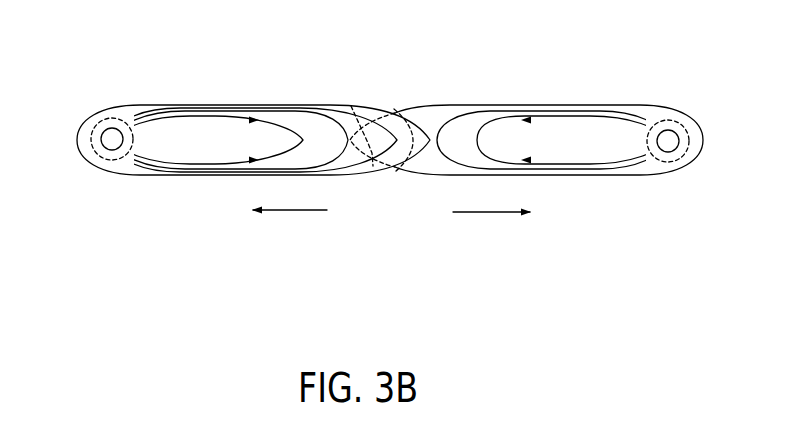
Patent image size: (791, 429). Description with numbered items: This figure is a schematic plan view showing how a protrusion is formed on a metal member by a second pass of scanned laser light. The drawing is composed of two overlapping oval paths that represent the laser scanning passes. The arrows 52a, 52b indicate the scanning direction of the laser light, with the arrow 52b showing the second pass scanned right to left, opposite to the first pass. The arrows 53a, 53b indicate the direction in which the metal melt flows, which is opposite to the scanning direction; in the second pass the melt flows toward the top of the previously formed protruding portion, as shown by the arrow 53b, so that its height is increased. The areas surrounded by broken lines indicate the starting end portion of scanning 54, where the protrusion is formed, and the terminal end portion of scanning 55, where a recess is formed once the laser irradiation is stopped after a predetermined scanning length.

The arrow indicating scanning direction 52a is at (490, 214).
The arrow indicating scanning direction 52b is at (290, 212).
The arrow indicating metal melt flow direction 53a is at (603, 105).
The arrow indicating metal melt flow direction 53b is at (180, 105).
The starting end portion of scanning 54 is at (351, 106).
The terminal end portion of scanning 55 is at (86, 130).